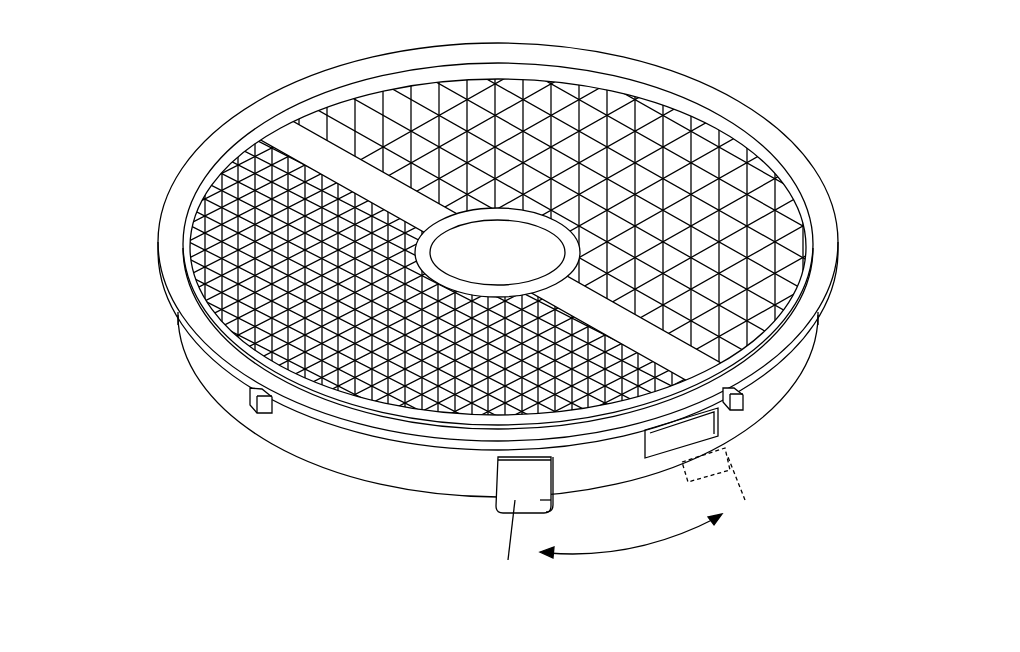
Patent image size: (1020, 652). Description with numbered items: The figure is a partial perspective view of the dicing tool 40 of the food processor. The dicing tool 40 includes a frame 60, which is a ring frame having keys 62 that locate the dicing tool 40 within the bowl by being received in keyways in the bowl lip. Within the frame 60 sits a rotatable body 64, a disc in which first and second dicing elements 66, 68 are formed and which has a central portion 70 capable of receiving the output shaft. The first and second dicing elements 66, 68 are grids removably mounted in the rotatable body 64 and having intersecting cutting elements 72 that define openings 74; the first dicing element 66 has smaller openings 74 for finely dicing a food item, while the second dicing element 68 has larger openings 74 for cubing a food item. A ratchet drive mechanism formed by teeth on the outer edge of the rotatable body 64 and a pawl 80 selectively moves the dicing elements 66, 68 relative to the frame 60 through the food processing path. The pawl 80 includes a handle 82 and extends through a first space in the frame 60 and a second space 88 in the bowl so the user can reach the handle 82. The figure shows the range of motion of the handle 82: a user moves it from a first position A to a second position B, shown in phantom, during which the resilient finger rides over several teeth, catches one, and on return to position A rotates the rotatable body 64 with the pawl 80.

The dicing tool 40 is at (180, 70).
The frame 60 is at (176, 361).
The keys 62 is at (250, 405).
The rotatable body 64 is at (705, 368).
The first dicing element 66 is at (190, 222).
The second dicing element 68 is at (641, 100).
The central portion 70 is at (485, 235).
The cutting elements 72 is at (740, 166).
The openings 74 is at (703, 177).
The pawl 80 is at (486, 518).
The handle 82 is at (553, 488).
The second space 88 is at (497, 460).